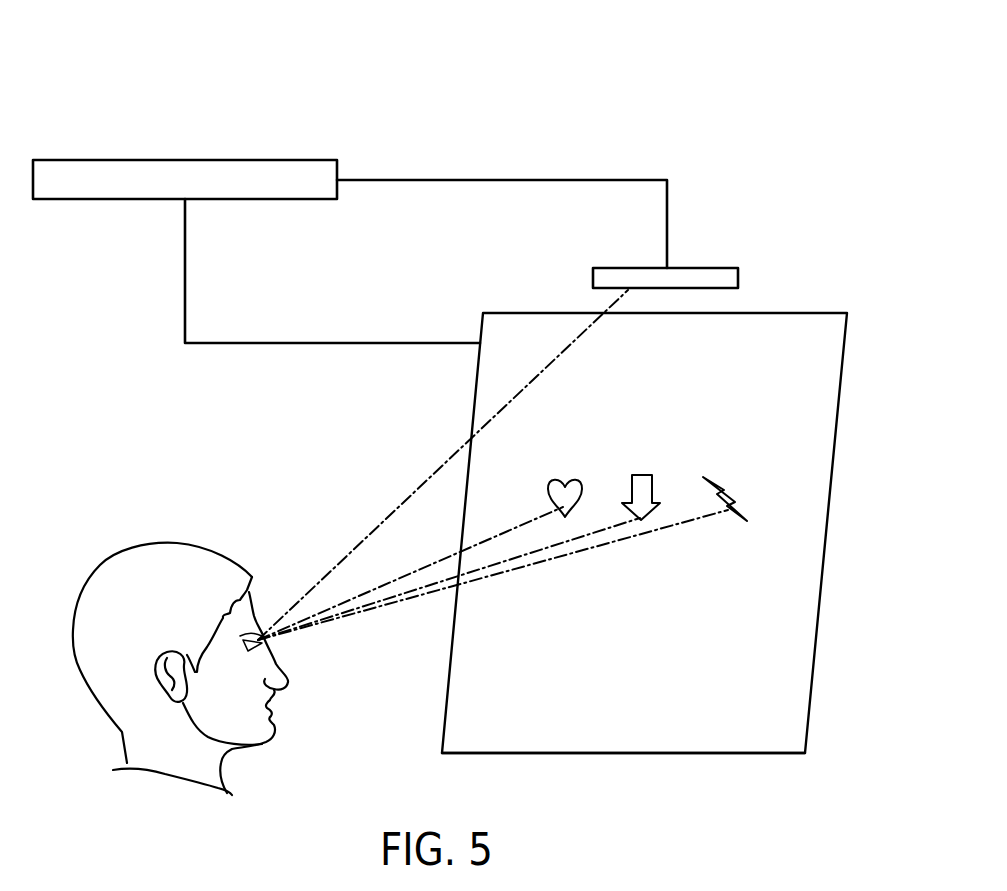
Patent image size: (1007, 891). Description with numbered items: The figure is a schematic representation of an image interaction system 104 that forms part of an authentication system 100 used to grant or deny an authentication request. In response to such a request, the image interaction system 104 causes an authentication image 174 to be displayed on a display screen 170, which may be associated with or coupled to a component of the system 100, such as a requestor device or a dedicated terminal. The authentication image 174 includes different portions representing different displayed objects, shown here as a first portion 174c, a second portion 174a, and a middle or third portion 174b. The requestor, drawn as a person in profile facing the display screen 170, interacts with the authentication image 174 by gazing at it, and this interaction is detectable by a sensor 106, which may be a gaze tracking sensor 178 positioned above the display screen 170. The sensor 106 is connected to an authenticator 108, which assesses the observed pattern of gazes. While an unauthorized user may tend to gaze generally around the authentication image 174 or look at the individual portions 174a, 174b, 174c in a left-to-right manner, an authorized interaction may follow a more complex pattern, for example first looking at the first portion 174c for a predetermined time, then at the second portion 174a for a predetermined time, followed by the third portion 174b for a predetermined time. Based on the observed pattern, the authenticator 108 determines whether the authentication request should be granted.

The authentication system 100 is at (692, 120).
The authenticator 108 is at (185, 160).
The sensor 106 is at (712, 250).
The gaze tracking sensor 178 is at (702, 268).
The image interaction system 104 is at (778, 305).
The display screen 170 is at (713, 753).
The authentication image 174 is at (667, 499).
The second portion of the authentication image 174a is at (553, 480).
The third portion of the authentication image 174b is at (640, 475).
The first portion of the authentication image 174c is at (757, 491).